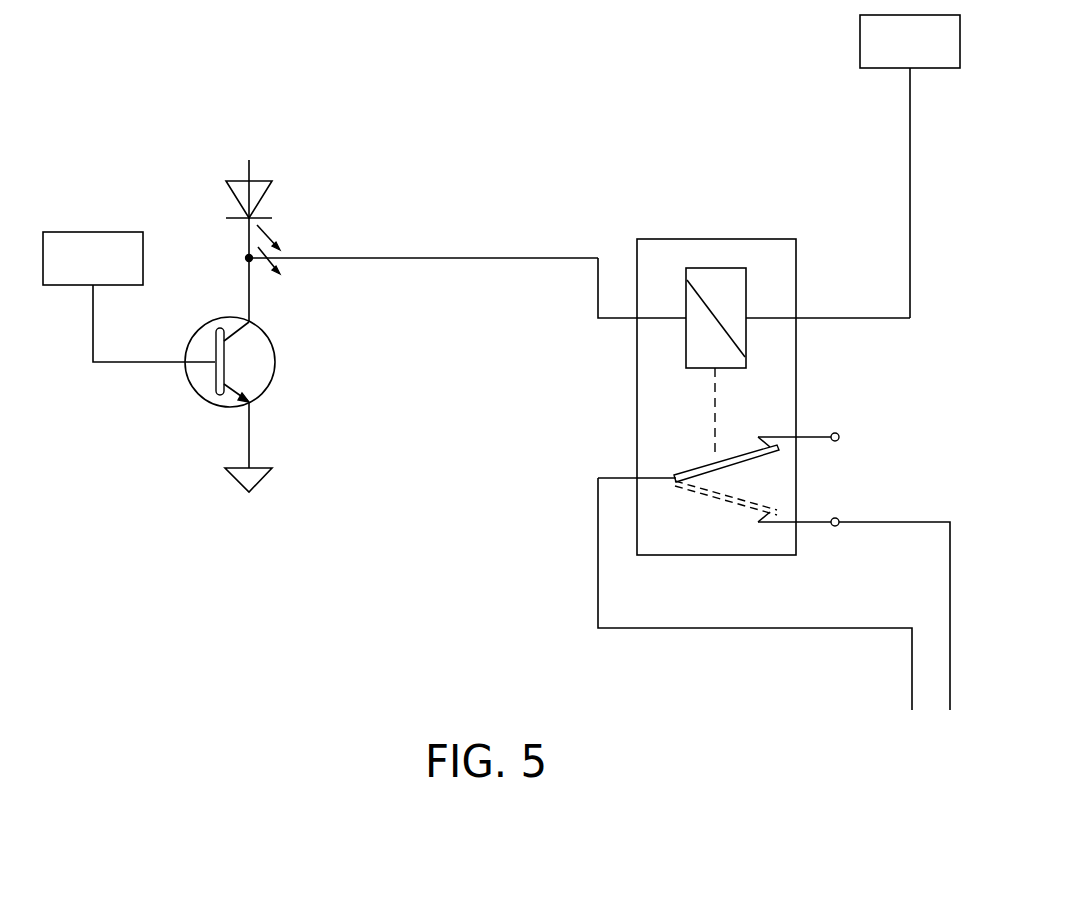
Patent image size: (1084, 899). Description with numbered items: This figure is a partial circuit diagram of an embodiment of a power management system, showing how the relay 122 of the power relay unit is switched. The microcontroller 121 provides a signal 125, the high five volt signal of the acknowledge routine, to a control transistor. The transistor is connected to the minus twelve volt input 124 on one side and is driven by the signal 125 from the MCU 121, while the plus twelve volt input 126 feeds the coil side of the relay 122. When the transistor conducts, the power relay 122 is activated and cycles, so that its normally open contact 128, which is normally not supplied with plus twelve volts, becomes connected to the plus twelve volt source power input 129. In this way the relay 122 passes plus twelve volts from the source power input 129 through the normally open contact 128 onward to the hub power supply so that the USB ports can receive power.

The microcontroller 121 is at (115, 271).
The relay 122 is at (796, 363).
The input 124 is at (249, 438).
The signal 125 is at (127, 362).
The input 126 is at (932, 54).
The normally open contact 128 is at (796, 522).
The source power input 129 is at (637, 478).